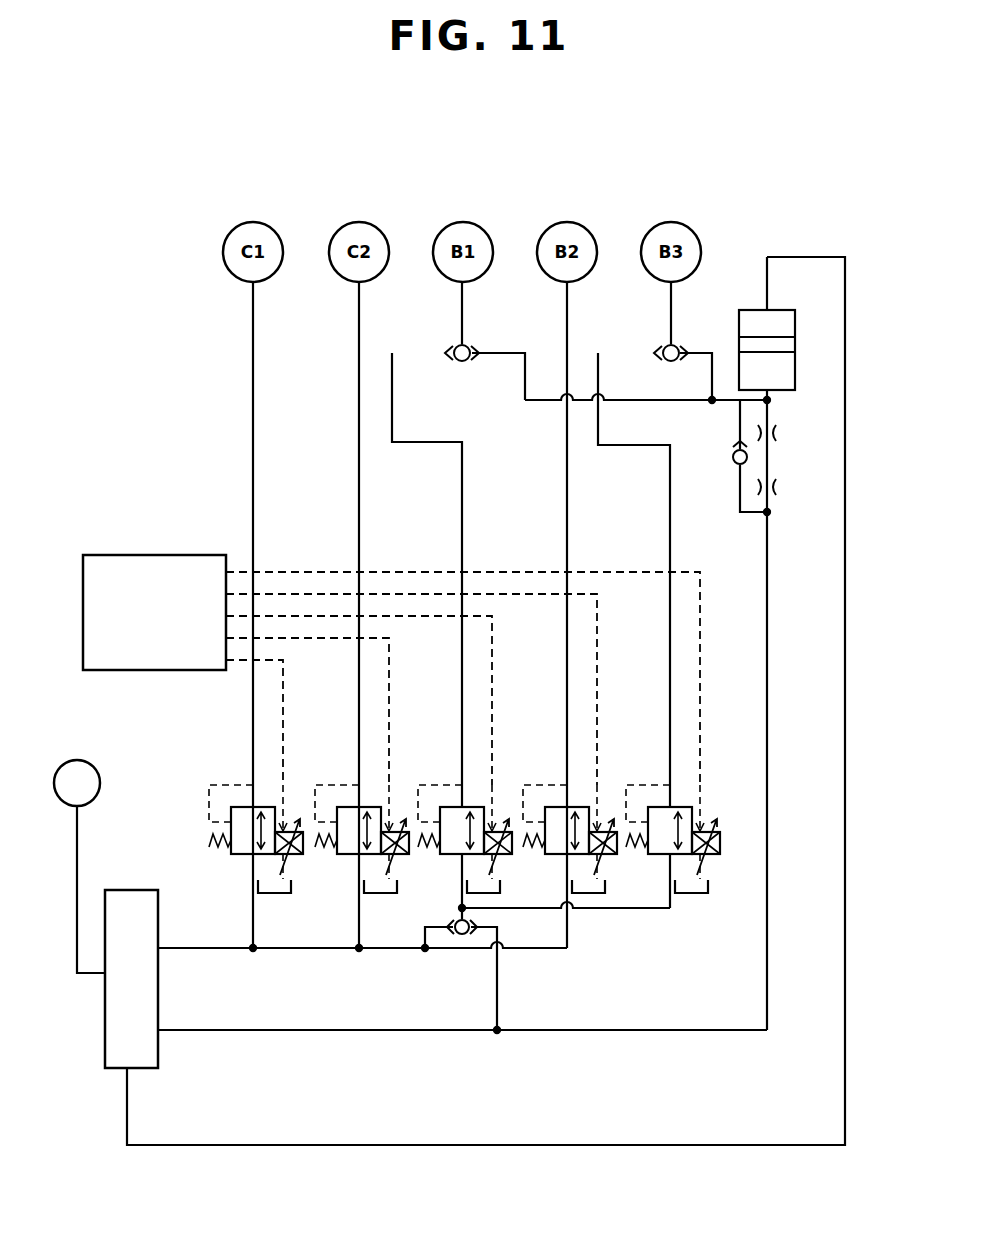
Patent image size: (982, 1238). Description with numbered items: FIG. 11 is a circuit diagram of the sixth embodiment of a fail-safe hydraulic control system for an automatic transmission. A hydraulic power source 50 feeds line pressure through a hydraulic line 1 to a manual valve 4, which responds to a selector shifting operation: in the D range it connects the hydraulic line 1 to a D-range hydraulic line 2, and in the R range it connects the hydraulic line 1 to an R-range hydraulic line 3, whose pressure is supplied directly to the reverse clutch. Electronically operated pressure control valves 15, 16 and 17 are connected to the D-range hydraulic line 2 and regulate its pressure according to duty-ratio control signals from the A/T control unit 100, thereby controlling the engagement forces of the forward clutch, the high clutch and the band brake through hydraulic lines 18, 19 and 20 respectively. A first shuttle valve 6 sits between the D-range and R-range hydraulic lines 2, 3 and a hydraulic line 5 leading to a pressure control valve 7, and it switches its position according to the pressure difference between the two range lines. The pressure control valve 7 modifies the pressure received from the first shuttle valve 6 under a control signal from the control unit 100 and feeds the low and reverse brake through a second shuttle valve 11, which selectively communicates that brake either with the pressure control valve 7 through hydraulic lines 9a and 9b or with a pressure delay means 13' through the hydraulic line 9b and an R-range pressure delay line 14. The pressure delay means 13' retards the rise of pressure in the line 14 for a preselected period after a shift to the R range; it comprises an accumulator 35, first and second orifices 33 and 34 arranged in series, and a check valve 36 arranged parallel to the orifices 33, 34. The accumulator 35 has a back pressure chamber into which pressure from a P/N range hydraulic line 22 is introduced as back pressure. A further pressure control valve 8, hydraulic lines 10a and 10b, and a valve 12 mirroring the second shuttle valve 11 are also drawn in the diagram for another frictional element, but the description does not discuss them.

The hydraulic line 1 is at (78, 858).
The D-range hydraulic line 2 is at (333, 951).
The R-range hydraulic line 3 is at (324, 1033).
The manual valve 4 is at (132, 890).
The hydraulic line 5 is at (461, 893).
The first shuttle valve 6 is at (461, 949).
The pressure control valve 7 is at (470, 800).
The solenoid valve for brake B3 8 is at (678, 800).
The hydraulic line 9a is at (426, 352).
The hydraulic line 9b is at (459, 306).
The bypass passage 10a is at (626, 352).
The passage to brake B3 10b is at (667, 307).
The second shuttle valve 11 is at (480, 350).
The check valve 12 is at (683, 345).
The pressure delay means 13' is at (800, 710).
The R-range pressure delay line 14 is at (674, 402).
The pressure control valve 15 is at (261, 800).
The pressure control valve 16 is at (367, 800).
The pressure control valve 17 is at (575, 800).
The hydraulic line 18 is at (253, 485).
The hydraulic line 19 is at (359, 485).
The hydraulic line 20 is at (567, 485).
The N/P range hydraulic line 22 is at (612, 1147).
The first orifice 33 is at (777, 489).
The second orifice 34 is at (777, 436).
The accumulator 35 is at (781, 308).
The check valve 36 is at (737, 463).
The hydraulic power source 50 is at (96, 769).
The A/T control unit 100 is at (132, 553).